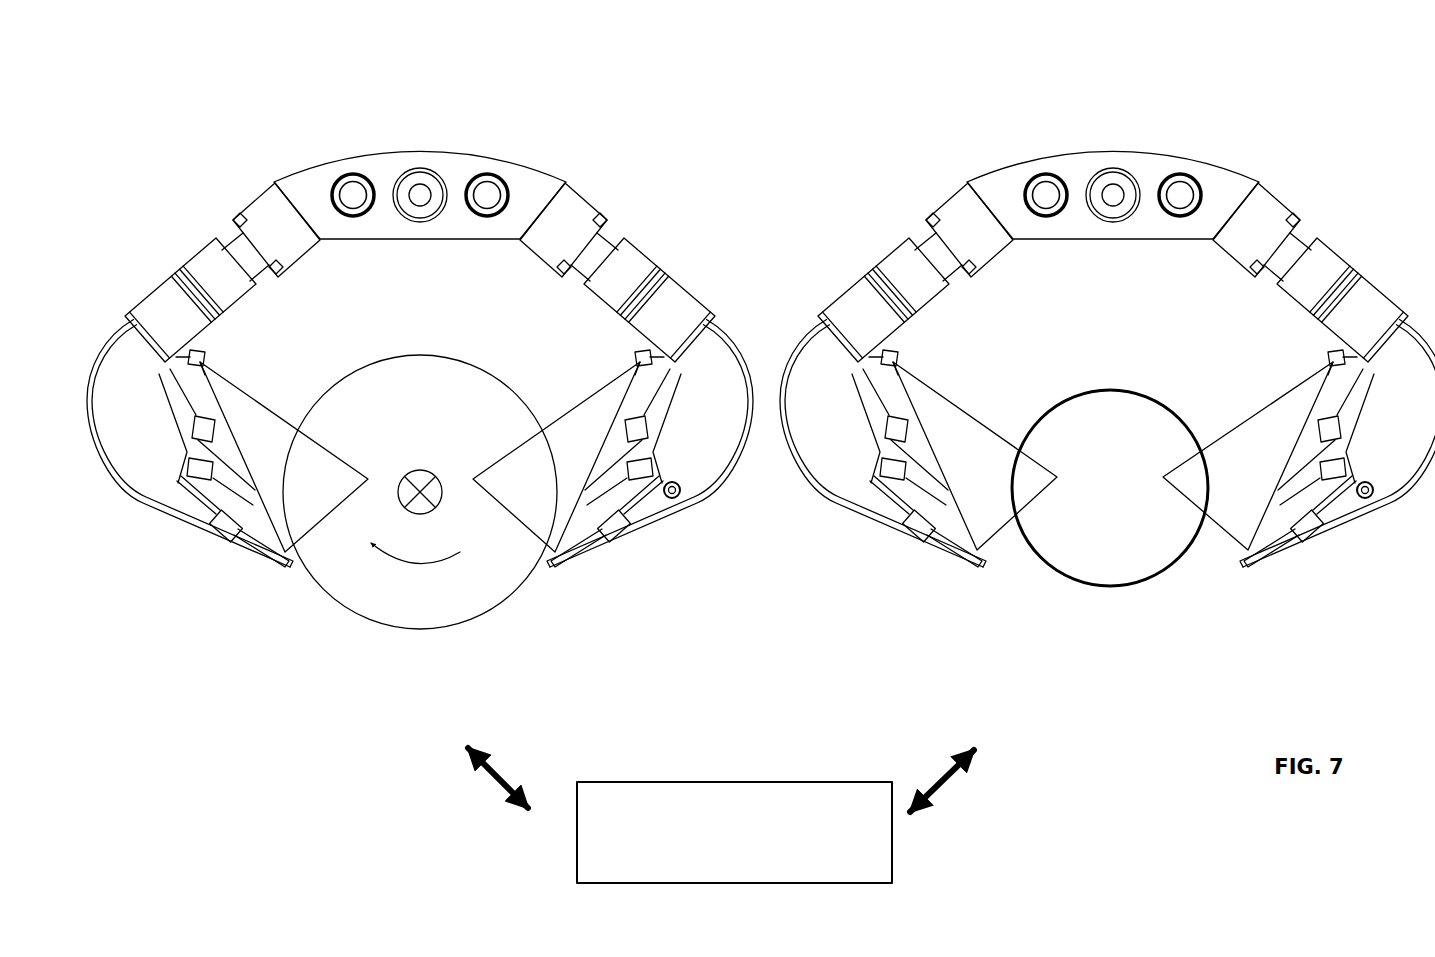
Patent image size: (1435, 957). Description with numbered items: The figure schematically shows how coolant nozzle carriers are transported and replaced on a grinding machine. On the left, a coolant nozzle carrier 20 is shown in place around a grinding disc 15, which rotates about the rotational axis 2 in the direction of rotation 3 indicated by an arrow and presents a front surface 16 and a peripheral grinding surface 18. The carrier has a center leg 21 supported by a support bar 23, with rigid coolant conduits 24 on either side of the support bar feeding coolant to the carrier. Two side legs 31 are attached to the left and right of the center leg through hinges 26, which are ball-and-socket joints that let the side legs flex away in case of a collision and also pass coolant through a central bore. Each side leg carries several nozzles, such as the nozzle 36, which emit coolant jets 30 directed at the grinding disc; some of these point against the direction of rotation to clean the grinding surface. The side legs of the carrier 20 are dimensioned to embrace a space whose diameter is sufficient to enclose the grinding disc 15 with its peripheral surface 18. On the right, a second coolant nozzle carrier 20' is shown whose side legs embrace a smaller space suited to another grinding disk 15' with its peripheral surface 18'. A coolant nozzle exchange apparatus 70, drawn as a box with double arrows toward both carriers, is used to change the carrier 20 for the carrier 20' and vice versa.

The coolant nozzle carrier 20 is at (448, 351).
The coolant nozzle carrier 20' is at (1160, 353).
The center leg 21 is at (456, 153).
The support bar 23 is at (419, 168).
The coolant conduits 24 is at (353, 173).
The hinges 26 is at (212, 220).
The nozzle 36 is at (206, 362).
The side legs 31 is at (761, 444).
The coolant jets 30 is at (945, 593).
The grinding disc 15 is at (420, 286).
The grinding disk 15' is at (1110, 472).
The front surface 16 is at (452, 393).
The peripheral grinding surface 18 is at (420, 501).
The peripheral surface 18' is at (1105, 574).
The rotational axis 2 is at (419, 469).
The direction of rotation 3 is at (418, 562).
The coolant nozzle exchange apparatus 70 is at (721, 815).